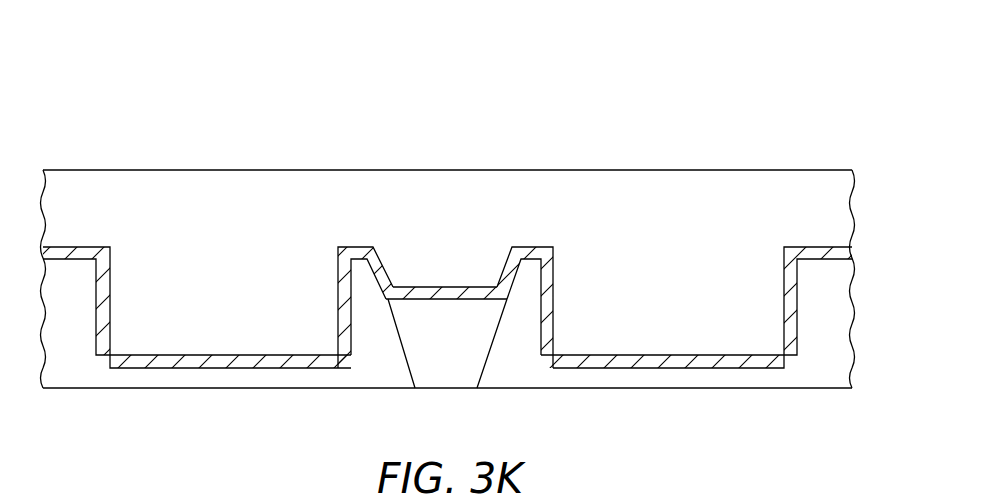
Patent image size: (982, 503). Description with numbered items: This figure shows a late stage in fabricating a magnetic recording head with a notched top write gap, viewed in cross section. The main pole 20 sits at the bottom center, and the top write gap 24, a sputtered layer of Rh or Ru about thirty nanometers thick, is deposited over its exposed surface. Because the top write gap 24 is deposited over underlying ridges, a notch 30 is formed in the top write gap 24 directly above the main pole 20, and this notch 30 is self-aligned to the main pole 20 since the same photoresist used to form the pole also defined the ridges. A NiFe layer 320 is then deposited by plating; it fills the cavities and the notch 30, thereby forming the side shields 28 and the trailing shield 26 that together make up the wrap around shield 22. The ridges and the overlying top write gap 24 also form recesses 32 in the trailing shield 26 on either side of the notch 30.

The main pole 20 is at (456, 345).
The wrap around shield 22 is at (201, 124).
The top write gap 24 is at (407, 283).
The trailing shield 26 is at (446, 207).
The side shields 28 is at (127, 303).
The notch 30 is at (476, 251).
The recesses 32 is at (343, 221).
The NiFe layer 320 is at (560, 176).